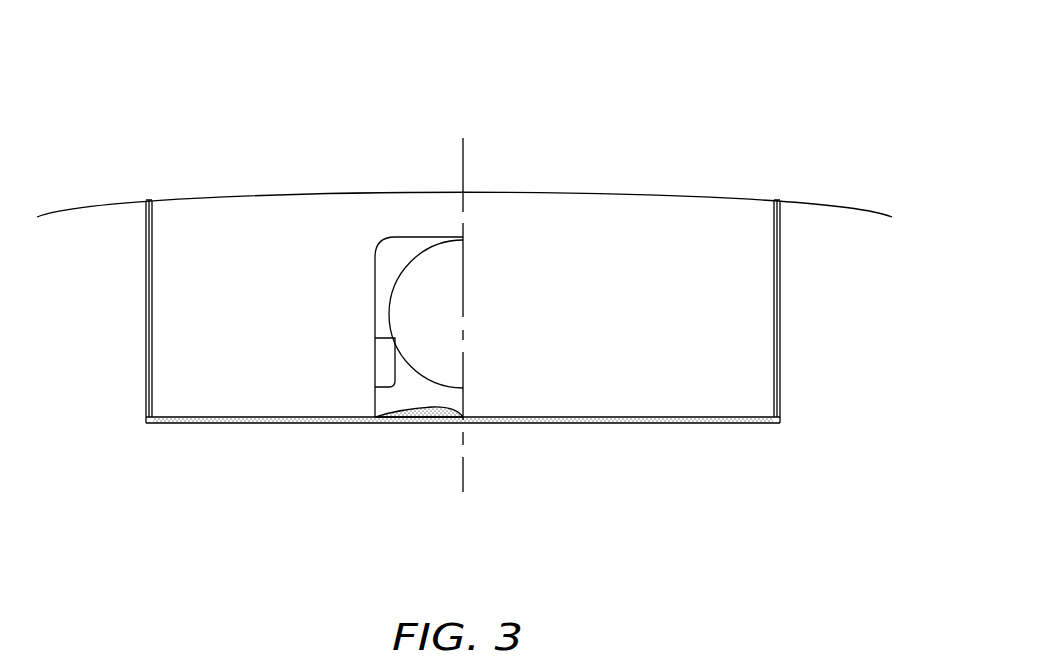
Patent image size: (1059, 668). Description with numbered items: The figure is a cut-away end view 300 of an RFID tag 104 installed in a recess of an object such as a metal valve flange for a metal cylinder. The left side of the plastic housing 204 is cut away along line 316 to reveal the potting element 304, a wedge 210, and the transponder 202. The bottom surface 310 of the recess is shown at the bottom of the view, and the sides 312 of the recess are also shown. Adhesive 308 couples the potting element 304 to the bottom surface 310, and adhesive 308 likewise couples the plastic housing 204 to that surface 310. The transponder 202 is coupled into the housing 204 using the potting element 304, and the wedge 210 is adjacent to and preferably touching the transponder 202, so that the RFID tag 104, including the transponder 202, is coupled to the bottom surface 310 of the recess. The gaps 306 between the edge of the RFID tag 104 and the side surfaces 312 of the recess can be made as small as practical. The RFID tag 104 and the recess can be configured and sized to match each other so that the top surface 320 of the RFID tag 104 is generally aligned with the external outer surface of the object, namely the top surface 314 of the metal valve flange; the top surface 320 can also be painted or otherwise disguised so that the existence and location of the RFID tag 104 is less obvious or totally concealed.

The cut-away end view 300 is at (745, 50).
The RFID tag 104 is at (777, 263).
The transponder 202 is at (445, 288).
The plastic housing 204 is at (158, 327).
The wedge 210 is at (380, 363).
The potting element 304 is at (410, 247).
The gaps 306 is at (148, 190).
The adhesive 308 is at (147, 421).
The bottom surface 310 is at (459, 445).
The sides 312 is at (463, 312).
The top surface 314 is at (92, 208).
The line 316 is at (463, 363).
The top surface 320 is at (470, 184).